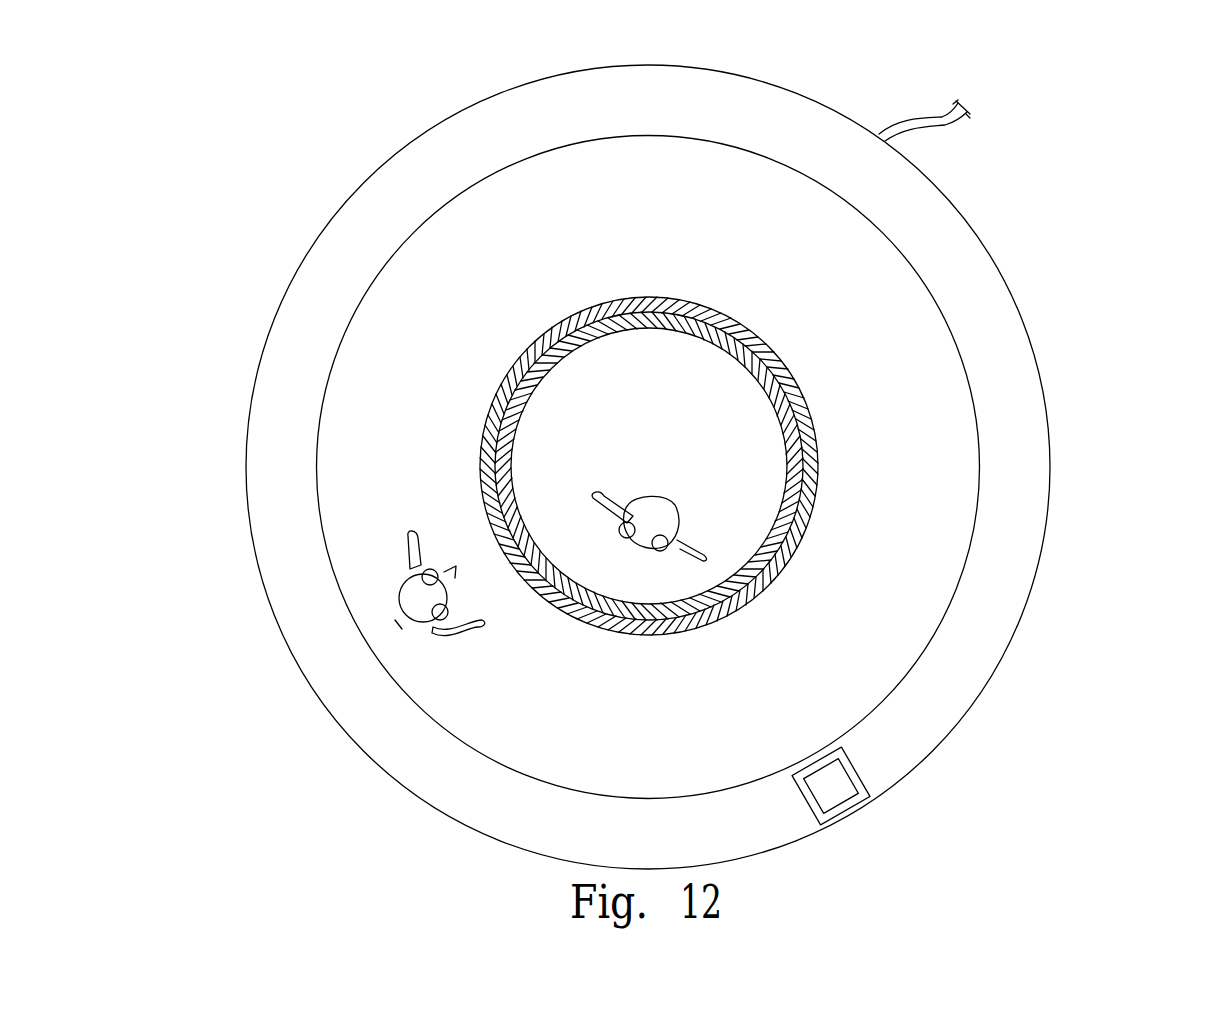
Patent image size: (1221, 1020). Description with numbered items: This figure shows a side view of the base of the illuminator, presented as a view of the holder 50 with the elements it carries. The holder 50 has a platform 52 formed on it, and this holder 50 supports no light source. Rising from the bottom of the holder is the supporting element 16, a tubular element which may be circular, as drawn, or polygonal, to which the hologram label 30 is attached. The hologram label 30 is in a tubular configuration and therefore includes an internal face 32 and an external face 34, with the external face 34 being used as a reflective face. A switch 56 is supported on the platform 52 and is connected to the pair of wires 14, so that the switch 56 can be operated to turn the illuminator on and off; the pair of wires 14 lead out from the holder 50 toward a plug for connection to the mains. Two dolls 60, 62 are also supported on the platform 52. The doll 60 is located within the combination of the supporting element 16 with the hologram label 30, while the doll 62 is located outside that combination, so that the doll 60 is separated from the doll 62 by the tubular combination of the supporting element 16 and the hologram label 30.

The pair of wires 14 is at (942, 122).
The supporting element 16 is at (614, 300).
The hologram label 30 is at (830, 445).
The internal face 32 is at (780, 354).
The external face 34 is at (805, 418).
The holder 50 is at (368, 721).
The platform 52 is at (398, 360).
The switch 56 is at (840, 788).
The doll 60 is at (660, 518).
The doll 62 is at (408, 602).